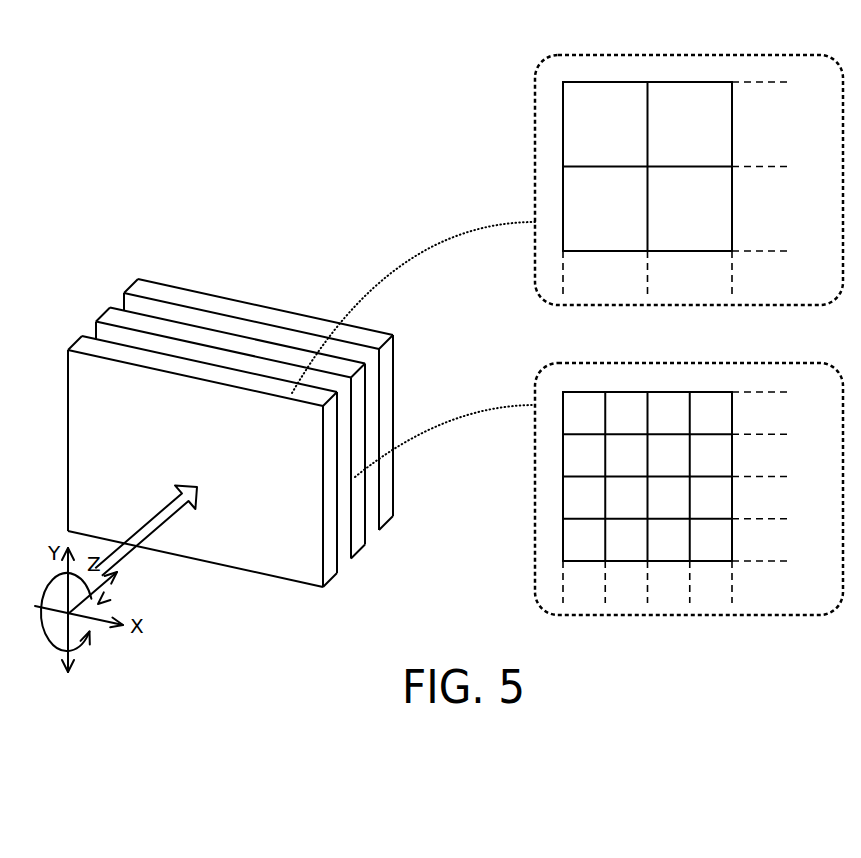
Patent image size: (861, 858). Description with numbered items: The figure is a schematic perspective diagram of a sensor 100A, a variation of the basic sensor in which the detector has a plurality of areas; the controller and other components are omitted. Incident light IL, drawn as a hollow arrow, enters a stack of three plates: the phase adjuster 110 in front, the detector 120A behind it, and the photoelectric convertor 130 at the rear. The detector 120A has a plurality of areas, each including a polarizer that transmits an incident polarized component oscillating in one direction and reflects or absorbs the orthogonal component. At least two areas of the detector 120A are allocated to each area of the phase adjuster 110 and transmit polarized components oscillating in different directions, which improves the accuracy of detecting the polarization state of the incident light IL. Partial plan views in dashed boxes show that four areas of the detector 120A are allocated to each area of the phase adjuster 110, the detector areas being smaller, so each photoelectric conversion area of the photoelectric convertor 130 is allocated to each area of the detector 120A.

The sensor 100A is at (300, 208).
The phase adjuster 110 is at (333, 585).
The detector 120A is at (365, 562).
The photoelectric convertor 130 is at (393, 532).
The incident light IL is at (135, 563).